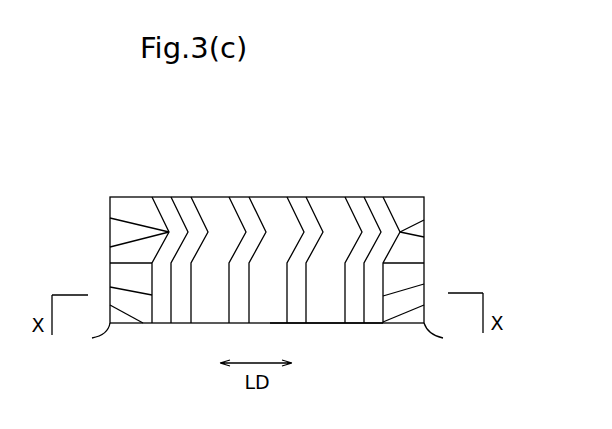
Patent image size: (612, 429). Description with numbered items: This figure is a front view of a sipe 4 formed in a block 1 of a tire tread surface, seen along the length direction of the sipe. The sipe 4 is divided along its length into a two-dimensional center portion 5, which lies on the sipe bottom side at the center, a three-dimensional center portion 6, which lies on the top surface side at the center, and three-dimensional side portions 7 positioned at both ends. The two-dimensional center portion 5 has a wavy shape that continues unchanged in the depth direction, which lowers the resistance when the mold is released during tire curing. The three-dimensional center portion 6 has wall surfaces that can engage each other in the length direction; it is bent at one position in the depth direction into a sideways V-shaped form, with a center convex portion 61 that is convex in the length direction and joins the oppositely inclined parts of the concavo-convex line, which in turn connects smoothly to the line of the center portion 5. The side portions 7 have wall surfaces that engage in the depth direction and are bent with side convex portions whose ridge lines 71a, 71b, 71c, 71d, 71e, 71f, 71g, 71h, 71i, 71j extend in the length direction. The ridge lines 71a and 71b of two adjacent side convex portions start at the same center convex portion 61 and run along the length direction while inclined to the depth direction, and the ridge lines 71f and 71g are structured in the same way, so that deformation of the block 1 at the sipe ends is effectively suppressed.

The block 1 is at (208, 197).
The sipe 4 is at (293, 205).
The 2D center portion 5 is at (327, 300).
The 3D center portion 6 is at (332, 205).
The 3D side portions 7 is at (138, 202).
The center convex portion 61 is at (180, 226).
The ridge line 71a is at (138, 221).
The ridge line 71b is at (128, 239).
The ridge line 71c is at (128, 264).
The ridge line 71d is at (126, 296).
The ridge line 71e is at (134, 316).
The ridge line 71f is at (413, 216).
The ridge line 71g is at (425, 234).
The ridge line 71h is at (412, 263).
The ridge line 71i is at (413, 290).
The ridge line 71j is at (401, 324).